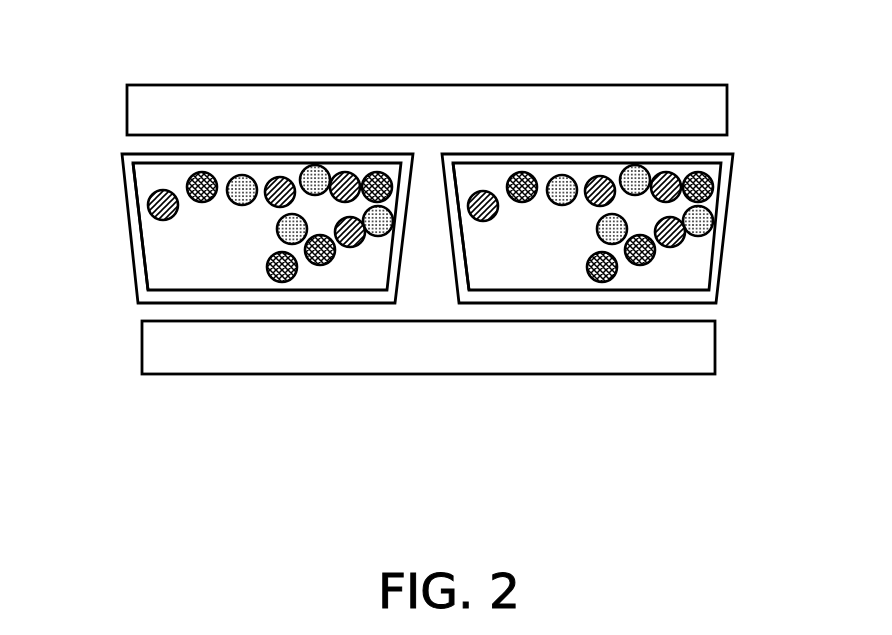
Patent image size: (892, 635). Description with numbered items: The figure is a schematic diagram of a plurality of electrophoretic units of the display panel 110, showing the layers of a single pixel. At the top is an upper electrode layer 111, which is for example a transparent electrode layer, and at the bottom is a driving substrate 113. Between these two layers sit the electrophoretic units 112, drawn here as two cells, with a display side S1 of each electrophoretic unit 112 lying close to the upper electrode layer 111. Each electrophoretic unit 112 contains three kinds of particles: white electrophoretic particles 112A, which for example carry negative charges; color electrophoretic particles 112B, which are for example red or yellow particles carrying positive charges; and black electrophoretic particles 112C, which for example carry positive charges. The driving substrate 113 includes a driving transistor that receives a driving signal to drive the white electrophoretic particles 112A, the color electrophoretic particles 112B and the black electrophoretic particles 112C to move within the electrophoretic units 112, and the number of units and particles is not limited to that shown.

The display panel 110 is at (840, 437).
The upper electrode layer 111 is at (718, 110).
The electrophoretic units 112 is at (732, 159).
The white electrophoretic particles 112A is at (596, 177).
The color electrophoretic particles 112B is at (282, 282).
The black electrophoretic particles 112C is at (326, 166).
The driving substrate 113 is at (712, 352).
The display side S1 is at (477, 167).